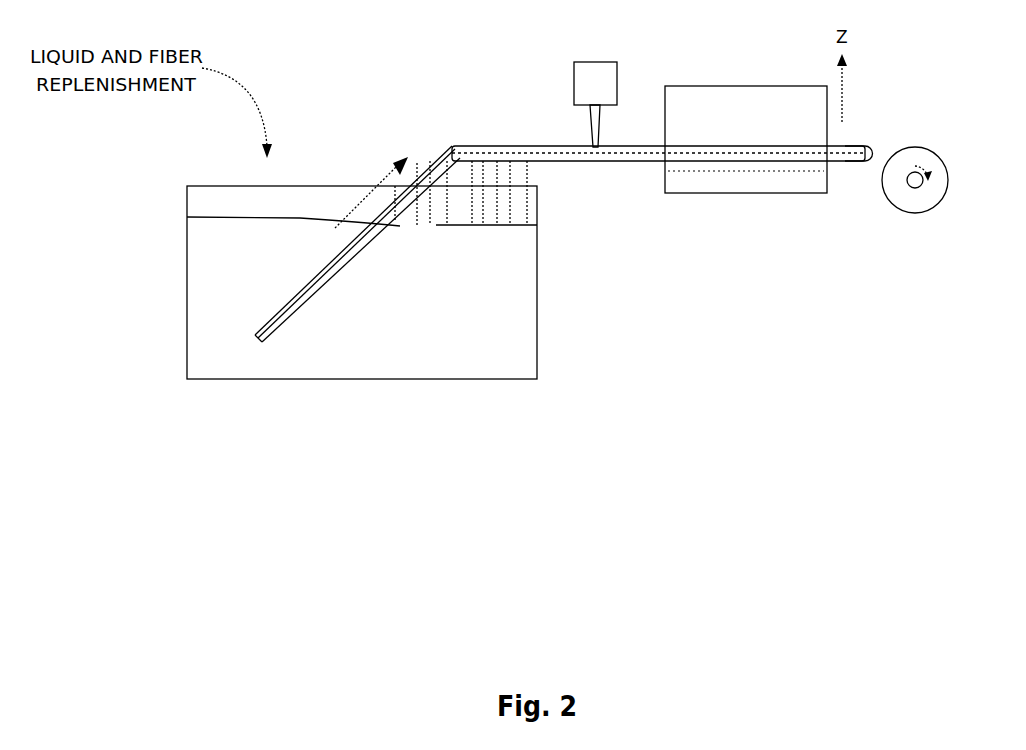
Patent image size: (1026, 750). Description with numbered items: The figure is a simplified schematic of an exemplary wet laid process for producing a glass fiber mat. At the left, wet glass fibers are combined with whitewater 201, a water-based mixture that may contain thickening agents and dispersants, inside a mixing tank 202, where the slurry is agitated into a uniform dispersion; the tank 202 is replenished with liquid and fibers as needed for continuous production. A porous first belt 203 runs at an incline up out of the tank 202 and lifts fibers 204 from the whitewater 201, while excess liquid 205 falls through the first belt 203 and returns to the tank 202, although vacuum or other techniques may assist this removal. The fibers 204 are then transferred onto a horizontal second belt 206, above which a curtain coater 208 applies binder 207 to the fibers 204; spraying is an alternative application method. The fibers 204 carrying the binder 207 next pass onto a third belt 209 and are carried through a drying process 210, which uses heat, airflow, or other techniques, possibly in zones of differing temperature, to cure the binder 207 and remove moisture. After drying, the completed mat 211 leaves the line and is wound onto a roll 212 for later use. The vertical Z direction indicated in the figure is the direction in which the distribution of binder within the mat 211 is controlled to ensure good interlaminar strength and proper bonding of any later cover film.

The whitewater 201 is at (454, 355).
The mixing tank 202 is at (362, 326).
The porous first belt 203 is at (346, 244).
The fibers 204 is at (388, 159).
The excess liquid 205 is at (496, 222).
The second belt 206 is at (658, 187).
The binder 207 is at (551, 126).
The curtain coater 208 is at (554, 83).
The third belt 209 is at (746, 202).
The drying process 210 is at (746, 105).
The completed mat 211 is at (885, 110).
The roll 212 is at (893, 204).